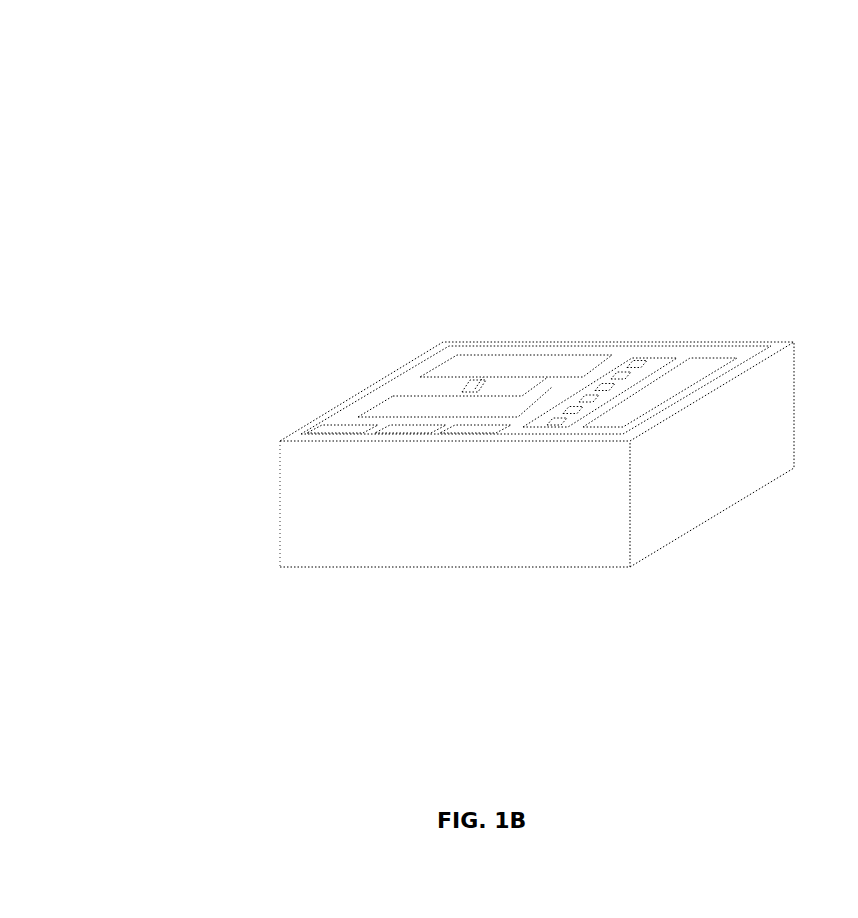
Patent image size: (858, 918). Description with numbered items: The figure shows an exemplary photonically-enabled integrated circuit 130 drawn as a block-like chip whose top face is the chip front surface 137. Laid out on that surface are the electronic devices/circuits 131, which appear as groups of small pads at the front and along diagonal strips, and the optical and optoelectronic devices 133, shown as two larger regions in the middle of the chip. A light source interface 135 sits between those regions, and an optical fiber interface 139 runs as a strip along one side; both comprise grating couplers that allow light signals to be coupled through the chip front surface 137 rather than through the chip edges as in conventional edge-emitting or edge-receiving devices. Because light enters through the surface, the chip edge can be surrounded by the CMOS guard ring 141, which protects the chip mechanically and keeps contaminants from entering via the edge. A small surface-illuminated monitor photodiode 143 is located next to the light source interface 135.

The photonically-enabled integrated circuit 130 is at (149, 101).
The electronic devices/circuits 131 is at (475, 430).
The optical and optoelectronic devices 133 is at (518, 374).
The light source interface 135 is at (473, 384).
The chip front surface 137 is at (570, 346).
The optical fiber interface 139 is at (655, 358).
The CMOS guard ring 141 is at (779, 343).
The surface-illuminated monitor photodiode 143 is at (462, 390).